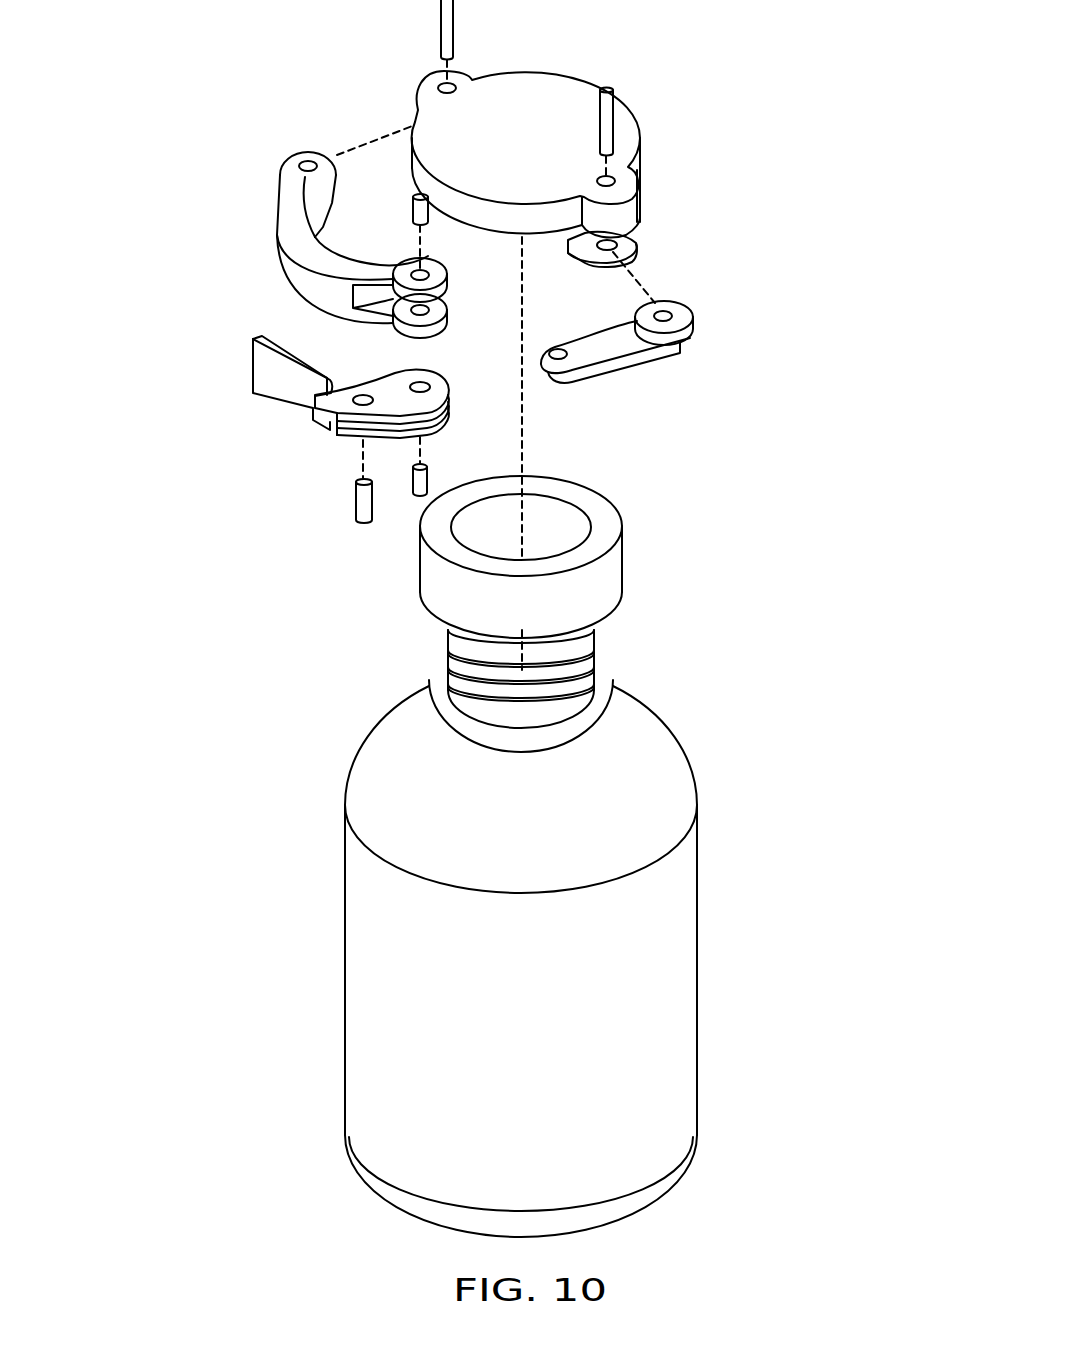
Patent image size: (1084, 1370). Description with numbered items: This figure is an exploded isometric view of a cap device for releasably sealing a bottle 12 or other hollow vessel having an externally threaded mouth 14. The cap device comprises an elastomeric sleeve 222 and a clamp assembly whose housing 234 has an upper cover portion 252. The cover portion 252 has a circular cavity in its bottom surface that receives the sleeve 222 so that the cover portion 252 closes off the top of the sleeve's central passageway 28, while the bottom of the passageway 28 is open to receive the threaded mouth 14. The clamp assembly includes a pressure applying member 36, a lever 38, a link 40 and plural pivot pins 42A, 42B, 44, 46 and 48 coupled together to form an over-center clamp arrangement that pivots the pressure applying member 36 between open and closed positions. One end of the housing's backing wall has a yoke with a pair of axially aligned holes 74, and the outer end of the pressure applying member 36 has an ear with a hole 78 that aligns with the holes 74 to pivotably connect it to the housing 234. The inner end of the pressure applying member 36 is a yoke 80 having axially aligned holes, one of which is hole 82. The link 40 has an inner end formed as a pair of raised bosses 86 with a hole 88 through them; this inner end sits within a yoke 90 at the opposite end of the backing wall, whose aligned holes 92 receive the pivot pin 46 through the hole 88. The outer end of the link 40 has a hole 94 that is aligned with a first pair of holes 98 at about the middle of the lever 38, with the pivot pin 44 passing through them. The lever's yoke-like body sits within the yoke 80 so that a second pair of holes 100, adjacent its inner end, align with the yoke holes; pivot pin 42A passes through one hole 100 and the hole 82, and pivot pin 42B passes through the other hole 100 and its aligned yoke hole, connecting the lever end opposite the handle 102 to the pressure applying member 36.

The bottle 12 is at (682, 938).
The externally threaded mouth 14 is at (598, 660).
The passageway 28 is at (558, 520).
The pressure applying member 36 is at (320, 203).
The lever 38 is at (359, 408).
The link 40 is at (659, 335).
The pivot pin 42A is at (427, 213).
The pivot pin 42B is at (430, 478).
The pivot pin 44 is at (353, 503).
The pivot pin 46 is at (608, 90).
The pivot pin 48 is at (438, 10).
The holes 74 is at (448, 86).
The hole 78 is at (308, 162).
The yoke 80 is at (439, 284).
The hole 82 is at (426, 271).
The raised bosses 86 is at (692, 316).
The hole 88 is at (666, 311).
The yoke 90 is at (595, 262).
The holes 92 is at (617, 244).
The hole 94 is at (564, 358).
The first pair of holes 98 is at (363, 395).
The second pair of holes 100 is at (426, 383).
The handle 102 is at (275, 387).
The elastomeric sleeve 222 is at (642, 558).
The housing 234 is at (640, 166).
The cover portion 252 is at (533, 97).